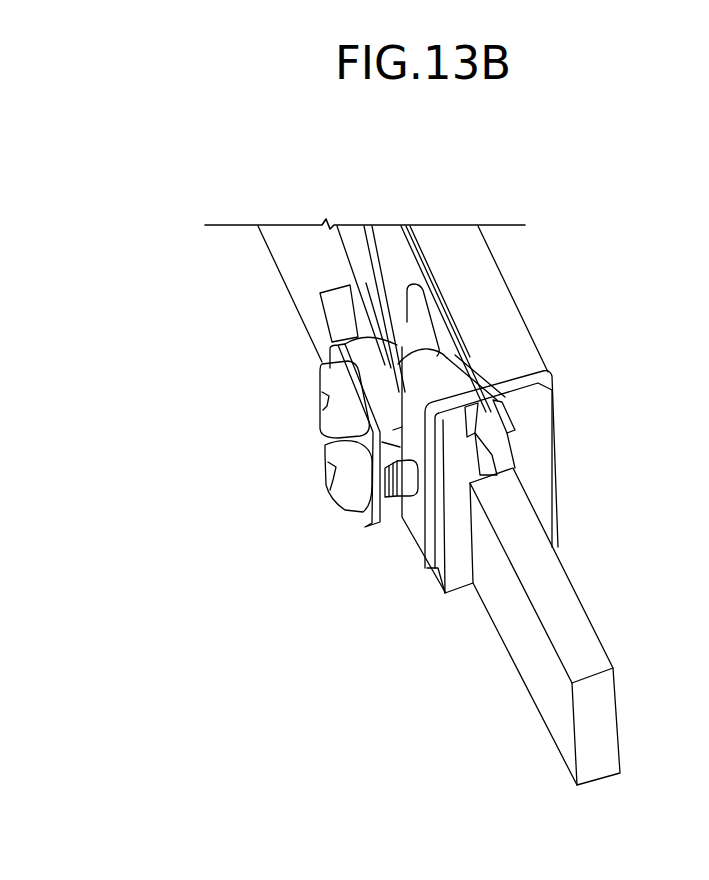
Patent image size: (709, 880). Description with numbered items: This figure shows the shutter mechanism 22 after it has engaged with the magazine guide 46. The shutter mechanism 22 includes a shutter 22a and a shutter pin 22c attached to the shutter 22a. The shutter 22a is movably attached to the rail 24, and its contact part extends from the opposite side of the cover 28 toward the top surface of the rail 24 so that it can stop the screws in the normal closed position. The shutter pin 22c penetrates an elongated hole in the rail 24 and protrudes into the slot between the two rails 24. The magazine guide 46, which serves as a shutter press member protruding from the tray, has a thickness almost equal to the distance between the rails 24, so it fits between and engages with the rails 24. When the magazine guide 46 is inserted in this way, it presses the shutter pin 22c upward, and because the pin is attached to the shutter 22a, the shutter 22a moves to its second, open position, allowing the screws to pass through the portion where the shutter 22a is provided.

The shutter mechanism 22 is at (418, 442).
The shutter 22a is at (435, 375).
The shutter pin 22c is at (400, 517).
The rail 24 is at (307, 273).
The cover 28 is at (445, 253).
The magazine guide 46 is at (520, 645).